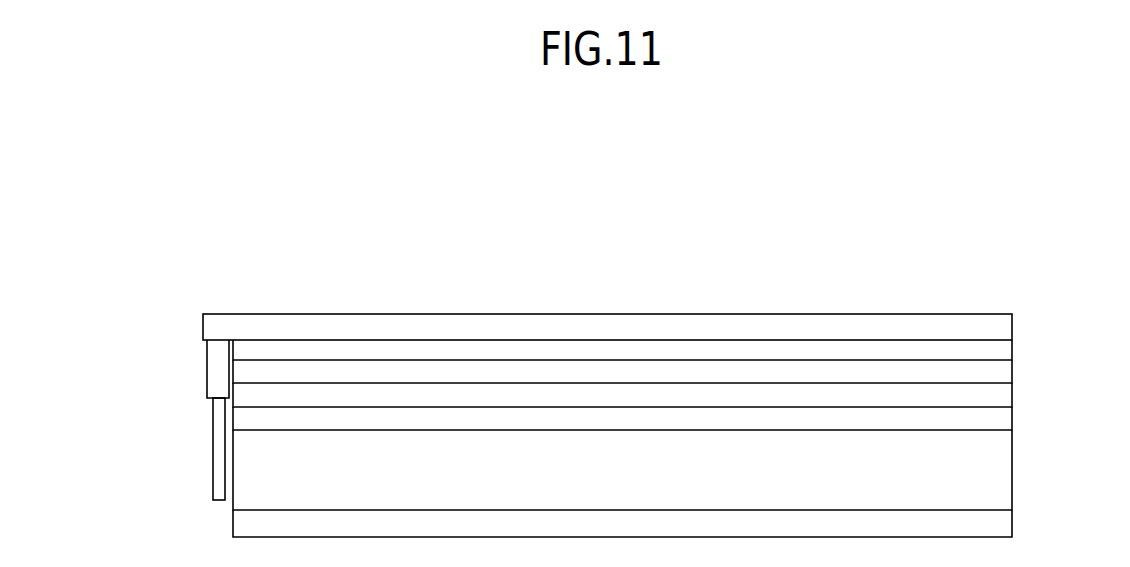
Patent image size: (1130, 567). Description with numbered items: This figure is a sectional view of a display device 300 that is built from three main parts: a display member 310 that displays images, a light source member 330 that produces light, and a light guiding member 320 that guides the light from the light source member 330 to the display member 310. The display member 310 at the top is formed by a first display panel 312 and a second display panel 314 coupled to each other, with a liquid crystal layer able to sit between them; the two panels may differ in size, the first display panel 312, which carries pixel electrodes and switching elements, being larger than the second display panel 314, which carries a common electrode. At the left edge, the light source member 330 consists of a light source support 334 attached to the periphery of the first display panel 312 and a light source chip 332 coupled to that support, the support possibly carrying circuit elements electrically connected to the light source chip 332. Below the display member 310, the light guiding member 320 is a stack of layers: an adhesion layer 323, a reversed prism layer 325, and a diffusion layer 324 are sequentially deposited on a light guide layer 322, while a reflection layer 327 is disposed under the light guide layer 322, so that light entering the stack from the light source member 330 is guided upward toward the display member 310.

The display device 300 is at (661, 263).
The display member 310 is at (1080, 312).
The first display panel 312 is at (995, 324).
The second display panel 314 is at (995, 349).
The light guiding member 320 is at (1080, 365).
The light guide layer 322 is at (995, 467).
The adhesion layer 323 is at (995, 419).
The diffusion layer 324 is at (995, 372).
The reversed prism layer 325 is at (995, 396).
The reflection layer 327 is at (995, 524).
The light source member 330 is at (135, 357).
The light source chip 332 is at (222, 438).
The light source support 334 is at (223, 365).